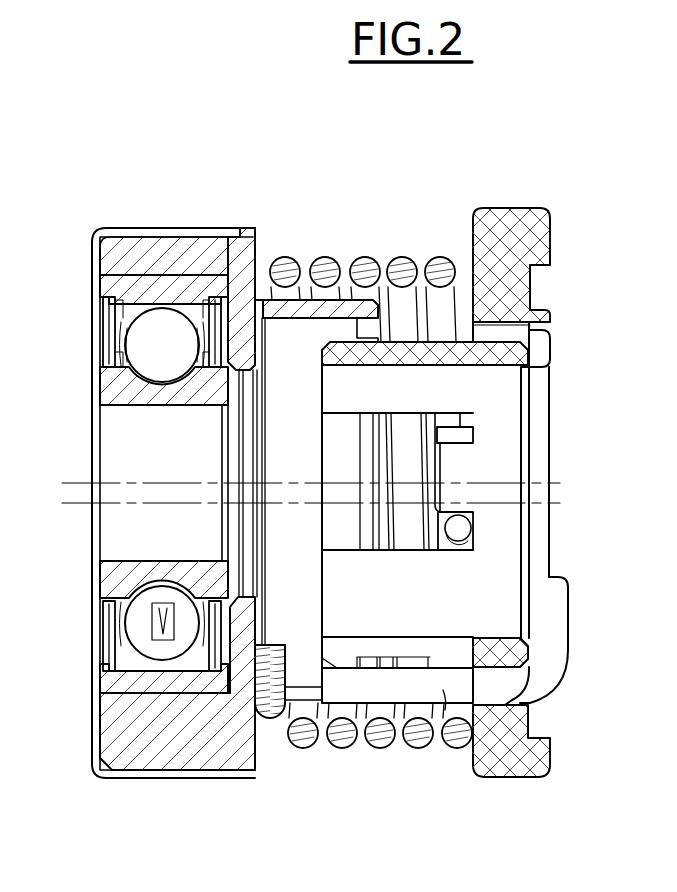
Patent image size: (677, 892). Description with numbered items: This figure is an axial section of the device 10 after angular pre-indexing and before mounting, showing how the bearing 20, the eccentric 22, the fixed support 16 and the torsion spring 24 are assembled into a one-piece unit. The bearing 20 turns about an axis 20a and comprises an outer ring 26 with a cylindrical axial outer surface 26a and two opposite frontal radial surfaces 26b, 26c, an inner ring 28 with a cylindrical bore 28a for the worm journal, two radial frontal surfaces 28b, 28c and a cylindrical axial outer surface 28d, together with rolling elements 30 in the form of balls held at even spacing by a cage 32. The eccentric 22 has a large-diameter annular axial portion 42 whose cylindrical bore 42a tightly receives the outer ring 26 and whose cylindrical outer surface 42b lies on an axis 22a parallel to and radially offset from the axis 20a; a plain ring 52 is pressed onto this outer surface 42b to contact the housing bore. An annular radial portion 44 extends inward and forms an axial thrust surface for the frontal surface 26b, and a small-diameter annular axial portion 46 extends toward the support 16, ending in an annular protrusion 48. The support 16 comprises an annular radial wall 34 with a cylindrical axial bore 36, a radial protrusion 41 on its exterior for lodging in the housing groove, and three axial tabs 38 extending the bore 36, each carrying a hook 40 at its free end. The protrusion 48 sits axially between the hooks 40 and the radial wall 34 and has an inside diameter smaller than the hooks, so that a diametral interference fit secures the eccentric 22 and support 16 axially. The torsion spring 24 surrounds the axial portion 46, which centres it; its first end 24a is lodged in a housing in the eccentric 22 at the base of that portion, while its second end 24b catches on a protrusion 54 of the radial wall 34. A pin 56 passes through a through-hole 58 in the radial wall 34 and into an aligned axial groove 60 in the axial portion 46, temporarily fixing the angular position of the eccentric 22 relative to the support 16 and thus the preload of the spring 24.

The device 10 is at (334, 465).
The fixed support 16 is at (547, 254).
The bearing 20 is at (158, 472).
The axis of rotation of the bearing 20a is at (555, 483).
The eccentric 22 is at (241, 505).
The axis of the eccentric outer surface 22a is at (555, 503).
The torsion spring 24 is at (454, 581).
The first end of the spring 24a is at (300, 695).
The second end of the spring 24b is at (458, 528).
The outer ring 26 is at (150, 692).
The cylindrical axial outer surface of the outer ring 26a is at (133, 729).
The frontal radial surface of the outer ring 26b is at (268, 700).
The frontal radial surface of the outer ring 26c is at (130, 679).
The inner ring 28 is at (112, 573).
The cylindrical bore of the inner ring 28a is at (123, 405).
The radial frontal surface of the inner ring 28b is at (238, 391).
The radial frontal surface of the inner ring 28c is at (96, 385).
The cylindrical axial outer surface of the inner ring 28d is at (110, 358).
The rolling elements 30 is at (146, 359).
The cage 32 is at (132, 608).
The annular radial wall 34 is at (510, 723).
The cylindrical axial bore 36 is at (493, 367).
The axial tabs 38 is at (425, 505).
The hook 40 is at (367, 327).
The radial protrusion 41 is at (513, 217).
The large-diameter annular axial portion 42 is at (163, 250).
The cylindrical bore of the axial portion 42a is at (104, 297).
The cylindrical outer surface of the axial portion 42b is at (198, 233).
The annular radial portion 44 is at (240, 332).
The small-diameter annular axial portion 46 is at (318, 307).
The annular protrusion 48 is at (376, 336).
The plain ring 52 is at (217, 773).
The protrusion 54 is at (455, 437).
The pin 56 is at (447, 690).
The through-hole 58 is at (522, 690).
The axial groove 60 is at (347, 660).